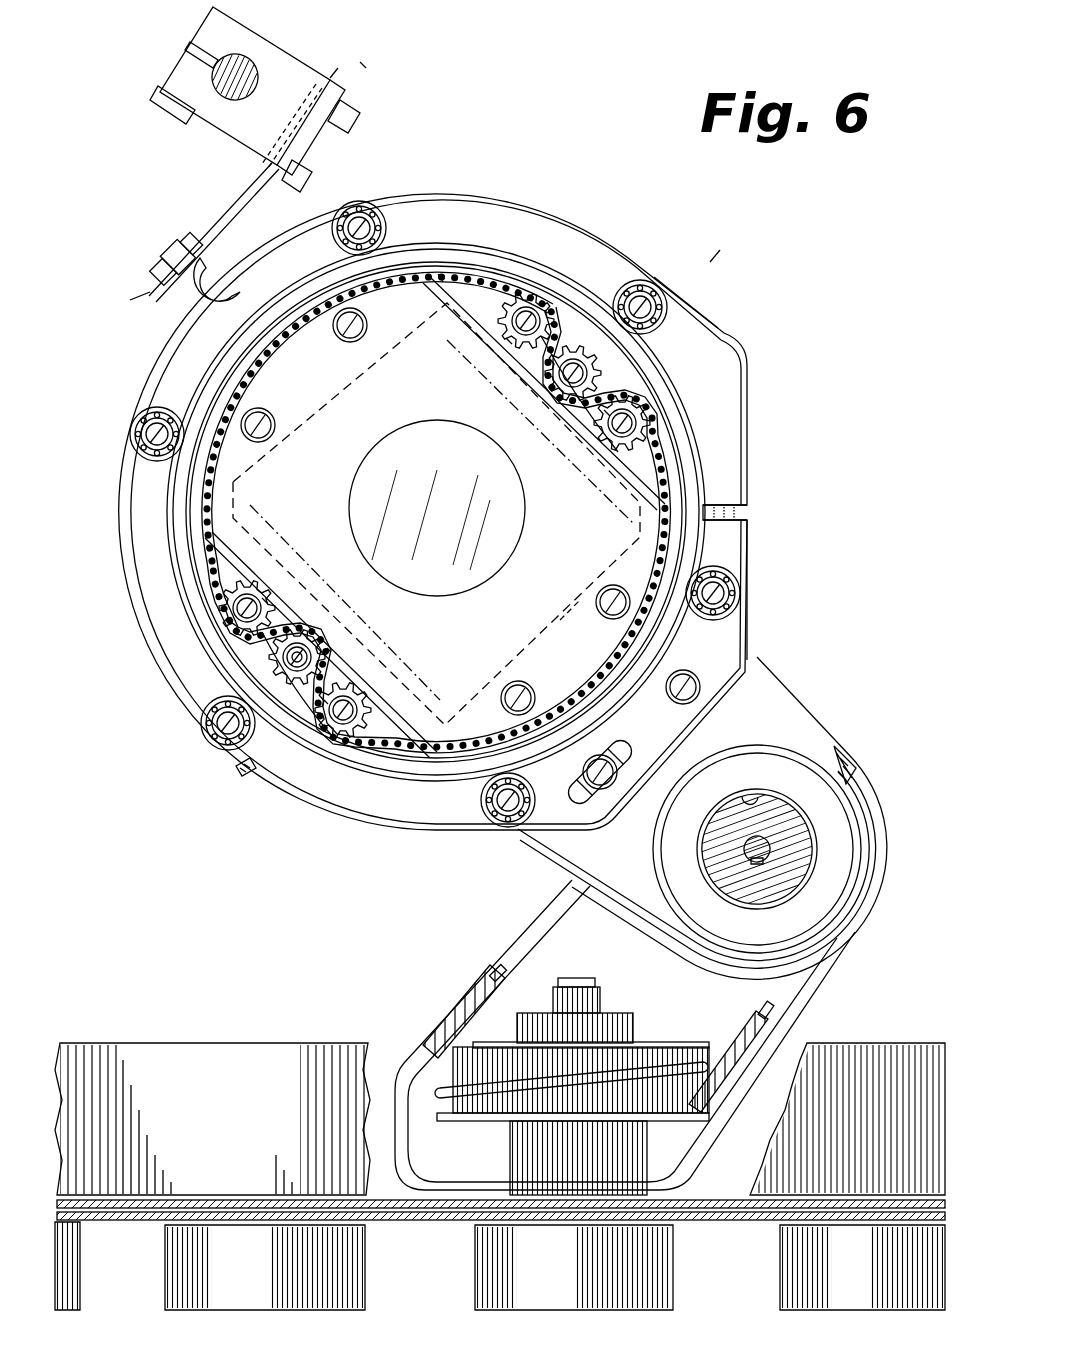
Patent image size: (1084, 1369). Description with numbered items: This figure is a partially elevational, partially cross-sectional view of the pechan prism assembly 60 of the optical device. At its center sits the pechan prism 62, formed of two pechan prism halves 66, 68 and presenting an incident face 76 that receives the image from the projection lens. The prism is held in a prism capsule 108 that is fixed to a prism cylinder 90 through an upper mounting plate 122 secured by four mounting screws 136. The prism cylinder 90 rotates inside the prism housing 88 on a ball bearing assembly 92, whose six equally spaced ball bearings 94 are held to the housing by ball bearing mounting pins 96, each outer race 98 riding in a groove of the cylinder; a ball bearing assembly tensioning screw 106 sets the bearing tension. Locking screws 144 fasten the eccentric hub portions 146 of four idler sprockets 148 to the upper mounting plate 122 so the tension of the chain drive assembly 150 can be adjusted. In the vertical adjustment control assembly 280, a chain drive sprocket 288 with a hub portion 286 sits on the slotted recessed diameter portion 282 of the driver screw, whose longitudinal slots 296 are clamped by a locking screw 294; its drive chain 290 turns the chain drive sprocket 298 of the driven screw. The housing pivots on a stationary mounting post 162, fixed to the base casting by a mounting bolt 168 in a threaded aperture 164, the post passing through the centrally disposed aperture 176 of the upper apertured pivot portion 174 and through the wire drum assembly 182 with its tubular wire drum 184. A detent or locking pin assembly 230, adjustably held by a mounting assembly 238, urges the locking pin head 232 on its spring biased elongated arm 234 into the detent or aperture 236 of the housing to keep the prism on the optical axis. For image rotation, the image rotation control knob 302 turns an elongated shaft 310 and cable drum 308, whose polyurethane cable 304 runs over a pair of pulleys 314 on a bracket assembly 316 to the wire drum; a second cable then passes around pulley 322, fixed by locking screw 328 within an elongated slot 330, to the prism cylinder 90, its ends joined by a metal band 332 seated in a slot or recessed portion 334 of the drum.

The pechan prism assembly 60 is at (665, 503).
The pechan prism 62 is at (431, 520).
The pechan prism half 66 is at (572, 618).
The pechan prism half 68 is at (298, 406).
The incident face 76 is at (475, 455).
The prism housing 88 is at (168, 386).
The prism cylinder 90 is at (205, 392).
The ball bearing assembly 92 is at (720, 258).
The ball bearings 94 is at (348, 222).
The ball bearing mounting pins 96 is at (338, 237).
The outer race 98 is at (364, 200).
The ball bearing assembly tensioning screw 106 is at (750, 515).
The prism capsule 108 is at (607, 640).
The upper mounting plate 122 is at (640, 365).
The mounting screws 136 is at (478, 285).
The locking screws 144 is at (545, 305).
The hub portions 146 is at (520, 300).
The idler sprockets 148 is at (508, 340).
The chain drive assembly 150 is at (450, 278).
The mounting post 162 is at (790, 830).
The threaded aperture 164 is at (764, 860).
The mounting bolt 168 is at (768, 848).
The upper apertured pivot portion 174 is at (832, 905).
The centrally disposed aperture 176 is at (752, 795).
The wire drum assembly 182 is at (862, 937).
The tubular wire drum 184 is at (825, 948).
The detent or locking pin assembly 230 is at (368, 64).
The detent or locking pin head 232 is at (215, 245).
The spring biased elongated arm 234 is at (237, 215).
The detent or aperture 236 is at (205, 286).
The mounting assembly 238 is at (275, 60).
The longitudinal or vertical adjustment control assembly 280 is at (800, 522).
The recessed diameter portion 282 is at (305, 655).
The hub portion 286 is at (268, 660).
The chain drive sprocket 288 is at (262, 782).
The drive chain 290 is at (439, 275).
The locking screw 294 is at (573, 360).
The longitudinal slots 296 is at (288, 628).
The chain drive sprocket 298 is at (640, 385).
The image rotation control knob 302 is at (480, 1302).
The polyurethane cable 304 is at (540, 934).
The cable drum 308 is at (637, 1060).
The elongated shaft 310 is at (520, 1154).
The pulleys 314 is at (490, 972).
The bracket assembly 316 is at (752, 1097).
The pulley 322 is at (560, 855).
The locking screw 328 is at (600, 792).
The elongated slot 330 is at (615, 755).
The metal band or splice 332 is at (847, 760).
The slot or recessed portion 334 is at (858, 766).